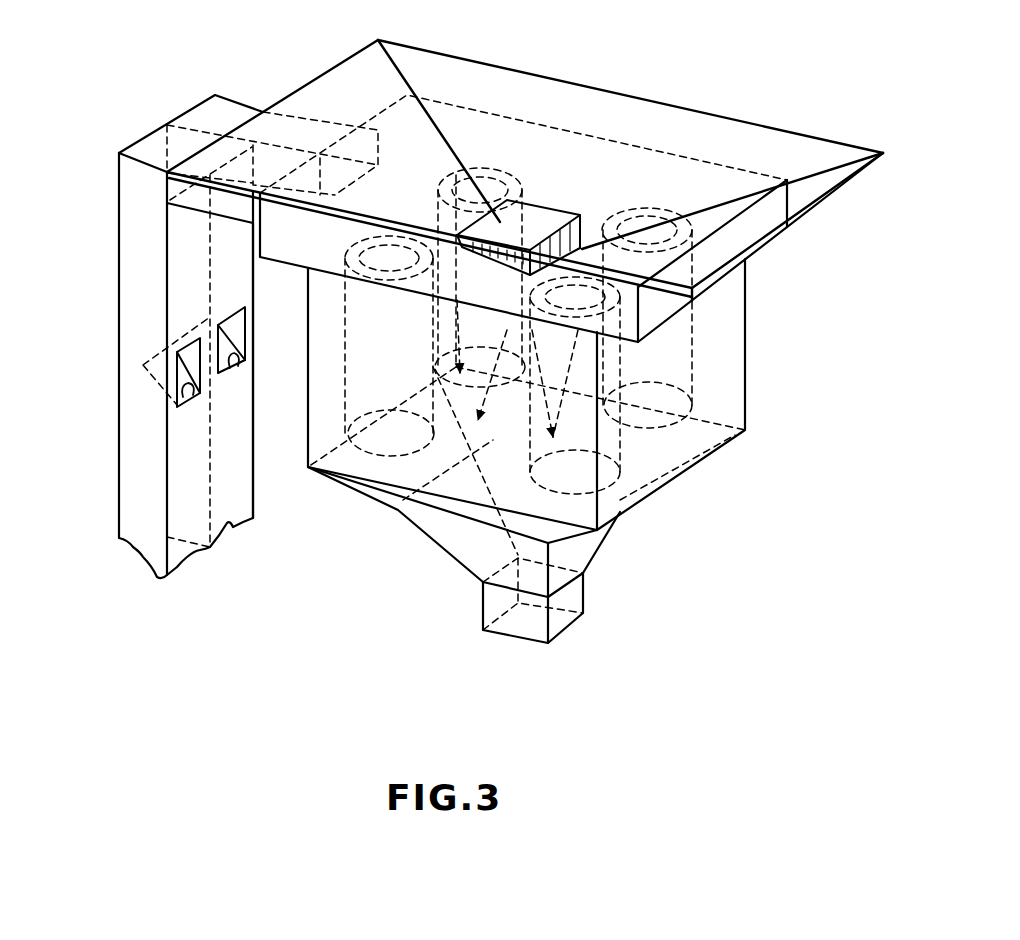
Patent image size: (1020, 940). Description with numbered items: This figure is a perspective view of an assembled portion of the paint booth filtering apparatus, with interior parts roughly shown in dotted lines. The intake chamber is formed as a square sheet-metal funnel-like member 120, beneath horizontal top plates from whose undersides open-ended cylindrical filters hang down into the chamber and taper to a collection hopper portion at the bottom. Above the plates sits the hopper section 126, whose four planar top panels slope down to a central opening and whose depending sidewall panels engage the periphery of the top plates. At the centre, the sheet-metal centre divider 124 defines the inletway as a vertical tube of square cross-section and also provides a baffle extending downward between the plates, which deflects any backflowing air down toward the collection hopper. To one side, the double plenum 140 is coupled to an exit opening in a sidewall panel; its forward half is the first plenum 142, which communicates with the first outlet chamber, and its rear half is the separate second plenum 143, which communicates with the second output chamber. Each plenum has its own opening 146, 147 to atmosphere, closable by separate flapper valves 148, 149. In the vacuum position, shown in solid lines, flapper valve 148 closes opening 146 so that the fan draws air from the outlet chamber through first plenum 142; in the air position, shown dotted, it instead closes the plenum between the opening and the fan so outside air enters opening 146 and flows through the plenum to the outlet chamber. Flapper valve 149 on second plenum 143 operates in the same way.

The funnel-like member 120 is at (673, 469).
The centre divider 124 is at (586, 208).
The hopper section 126 is at (636, 78).
The double plenum 140 is at (157, 126).
The first plenum 142 is at (197, 555).
The second plenum 143 is at (243, 523).
The opening 146 is at (197, 382).
The opening 147 is at (236, 370).
The flapper valve 148 is at (183, 378).
The flapper valve 149 is at (228, 318).